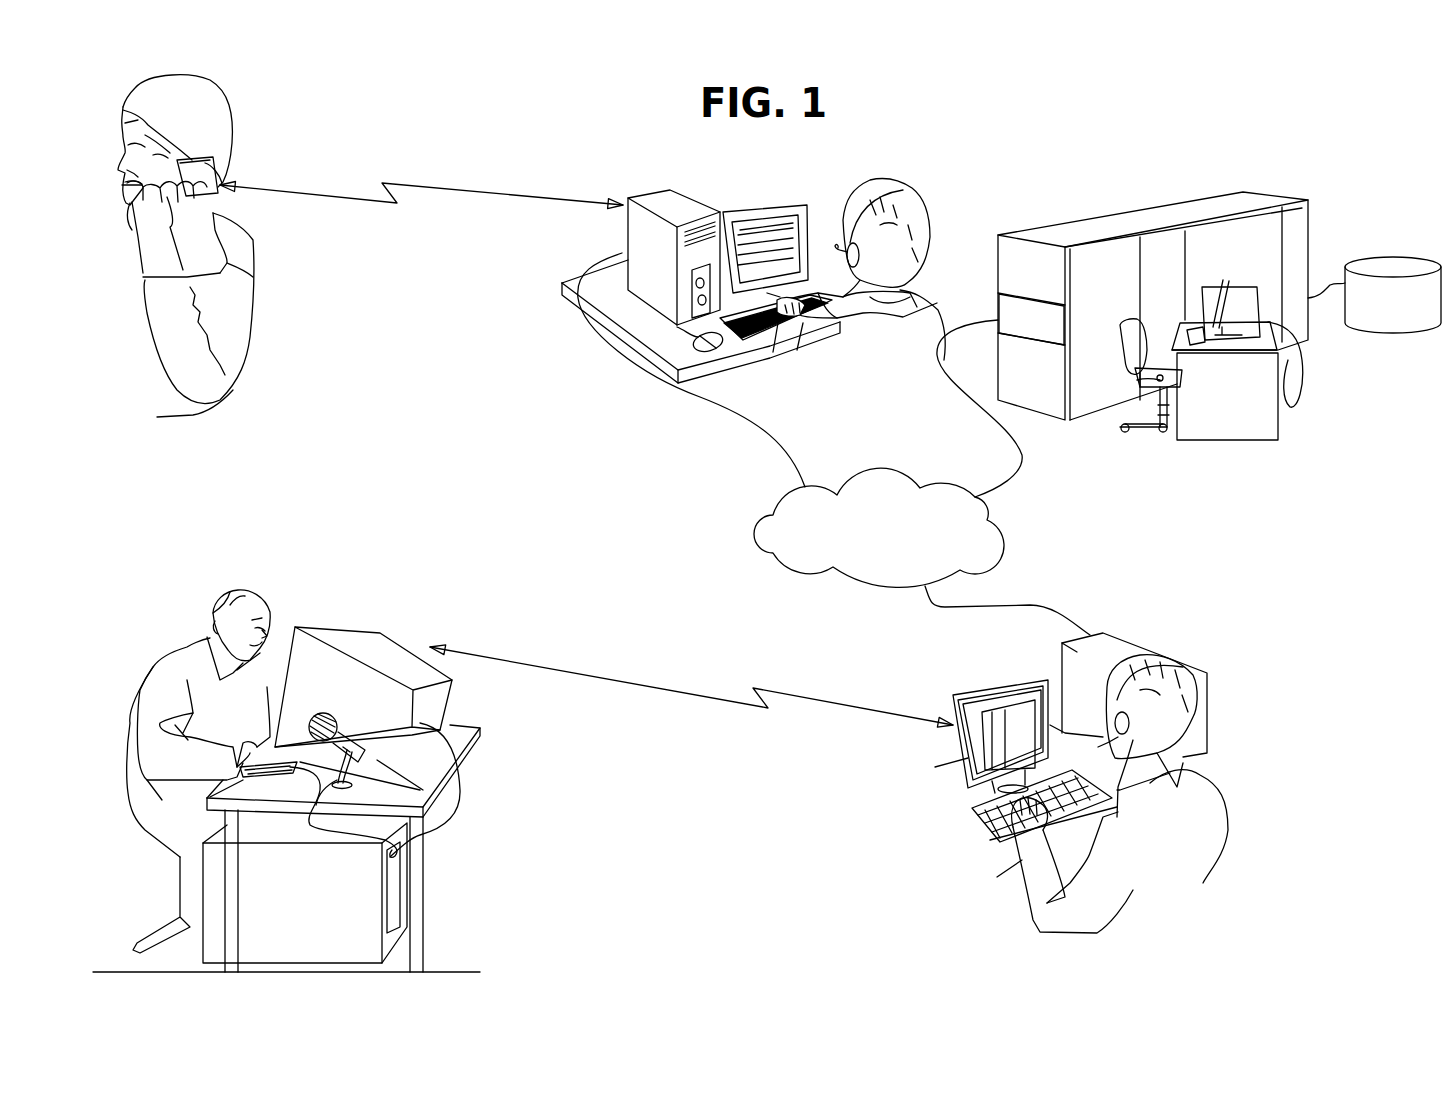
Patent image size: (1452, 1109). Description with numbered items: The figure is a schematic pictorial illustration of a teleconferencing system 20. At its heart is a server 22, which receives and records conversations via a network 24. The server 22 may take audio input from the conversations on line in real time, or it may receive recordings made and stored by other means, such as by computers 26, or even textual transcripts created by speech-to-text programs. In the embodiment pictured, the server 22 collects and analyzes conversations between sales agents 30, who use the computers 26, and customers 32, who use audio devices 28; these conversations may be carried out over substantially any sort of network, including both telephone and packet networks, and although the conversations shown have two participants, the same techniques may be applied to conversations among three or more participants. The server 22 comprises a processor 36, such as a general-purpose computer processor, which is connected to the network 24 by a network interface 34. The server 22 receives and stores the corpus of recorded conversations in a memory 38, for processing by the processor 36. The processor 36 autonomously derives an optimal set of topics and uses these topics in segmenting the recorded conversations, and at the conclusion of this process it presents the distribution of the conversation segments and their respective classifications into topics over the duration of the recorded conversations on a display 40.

The teleconferencing system 20 is at (1258, 133).
The server 22 is at (1423, 445).
The network 24 is at (865, 467).
The computers 26 is at (693, 212).
The audio devices 28 is at (218, 175).
The sales agents 30 is at (917, 212).
The customers 32 is at (202, 113).
The network interface 34 is at (1038, 305).
The processor 36 is at (1150, 210).
The memory 38 is at (1368, 257).
The display 40 is at (1237, 280).